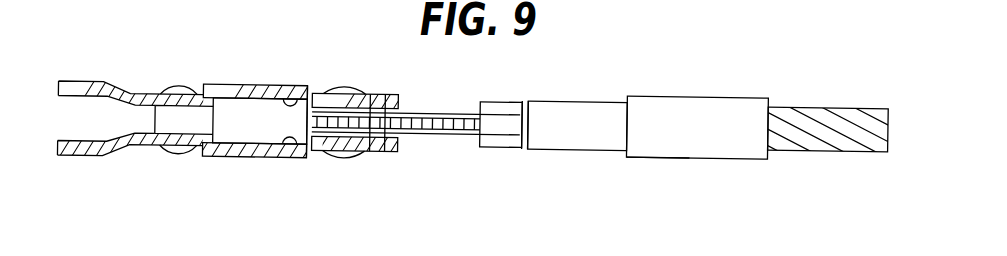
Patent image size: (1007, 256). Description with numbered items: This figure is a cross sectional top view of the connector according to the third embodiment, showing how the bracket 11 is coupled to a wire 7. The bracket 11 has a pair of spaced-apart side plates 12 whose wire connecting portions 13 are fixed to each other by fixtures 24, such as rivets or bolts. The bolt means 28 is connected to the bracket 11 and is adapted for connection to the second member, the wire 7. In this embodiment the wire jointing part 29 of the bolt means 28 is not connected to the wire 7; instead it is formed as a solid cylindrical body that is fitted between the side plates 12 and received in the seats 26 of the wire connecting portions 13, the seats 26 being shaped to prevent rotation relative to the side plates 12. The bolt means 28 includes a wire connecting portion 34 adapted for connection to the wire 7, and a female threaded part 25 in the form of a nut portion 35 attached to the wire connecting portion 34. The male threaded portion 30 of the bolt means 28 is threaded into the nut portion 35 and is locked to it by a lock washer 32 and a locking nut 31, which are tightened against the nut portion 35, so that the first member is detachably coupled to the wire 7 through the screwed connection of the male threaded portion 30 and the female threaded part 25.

The wire 7 is at (863, 151).
The bracket 11 is at (134, 158).
The side plates 12 is at (240, 80).
The wire connecting portions 13 is at (385, 150).
The fixture 24 is at (178, 156).
The female threaded part 25 is at (649, 166).
The seat 26 is at (297, 97).
The bolt means 28 is at (448, 140).
The wire jointing part 29 is at (232, 134).
The male threaded portion 30 is at (420, 131).
The locking nut 31 is at (497, 107).
The lock washer 32 is at (525, 148).
The wire connecting portion 34 is at (708, 150).
The nut portion 35 is at (587, 137).